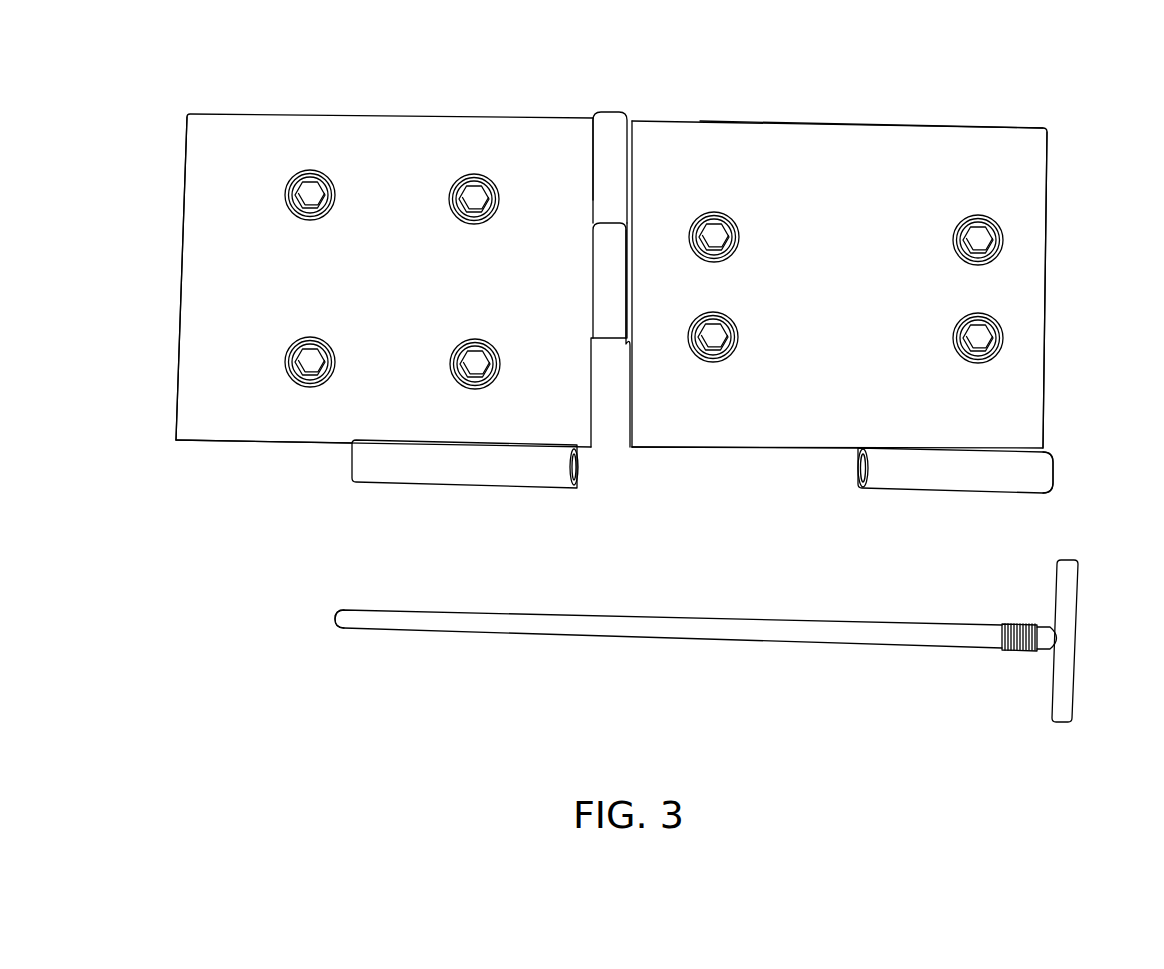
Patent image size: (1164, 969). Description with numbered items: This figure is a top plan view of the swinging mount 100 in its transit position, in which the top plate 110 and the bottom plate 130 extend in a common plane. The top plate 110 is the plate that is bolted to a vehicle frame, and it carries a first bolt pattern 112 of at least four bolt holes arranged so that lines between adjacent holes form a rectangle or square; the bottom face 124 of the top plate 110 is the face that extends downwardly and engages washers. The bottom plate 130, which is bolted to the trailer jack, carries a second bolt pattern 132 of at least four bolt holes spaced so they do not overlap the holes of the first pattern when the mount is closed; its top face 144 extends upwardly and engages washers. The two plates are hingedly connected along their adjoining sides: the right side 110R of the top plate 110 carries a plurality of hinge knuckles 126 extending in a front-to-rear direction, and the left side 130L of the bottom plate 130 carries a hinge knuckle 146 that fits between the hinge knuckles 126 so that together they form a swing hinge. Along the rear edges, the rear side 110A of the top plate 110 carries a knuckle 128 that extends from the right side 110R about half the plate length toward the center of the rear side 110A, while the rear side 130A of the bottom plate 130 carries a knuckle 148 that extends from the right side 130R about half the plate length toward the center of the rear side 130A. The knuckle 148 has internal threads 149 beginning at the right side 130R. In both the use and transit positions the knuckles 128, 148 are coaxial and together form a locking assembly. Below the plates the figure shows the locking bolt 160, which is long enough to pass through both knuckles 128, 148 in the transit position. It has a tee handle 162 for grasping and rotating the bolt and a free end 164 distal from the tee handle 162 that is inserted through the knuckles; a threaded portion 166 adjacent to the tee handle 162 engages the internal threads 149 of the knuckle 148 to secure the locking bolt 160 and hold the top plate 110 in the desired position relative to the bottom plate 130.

The swinging mount 100 is at (840, 55).
The top plate 110 is at (343, 128).
The right side of top plate 110R is at (618, 112).
The rear side of top plate 110A is at (240, 437).
The first bolt pattern 112 is at (298, 192).
The bottom face of top plate 124 is at (203, 350).
The hinge knuckles 126 is at (605, 120).
The knuckle 128 is at (352, 460).
The bottom plate 130 is at (1018, 130).
The left side of bottom plate 130L is at (640, 136).
The right side of bottom plate 130R is at (1043, 415).
The rear side of bottom plate 130A is at (770, 445).
The second bolt pattern 132 is at (985, 238).
The top face of bottom plate 144 is at (898, 135).
The hinge knuckle 146 is at (620, 243).
The knuckle 148 is at (870, 468).
The internal threads 149 is at (1045, 470).
The locking bolt 160 is at (672, 645).
The tee handle 162 is at (1075, 660).
The free end 164 is at (364, 630).
The knurled section 166 is at (1012, 653).